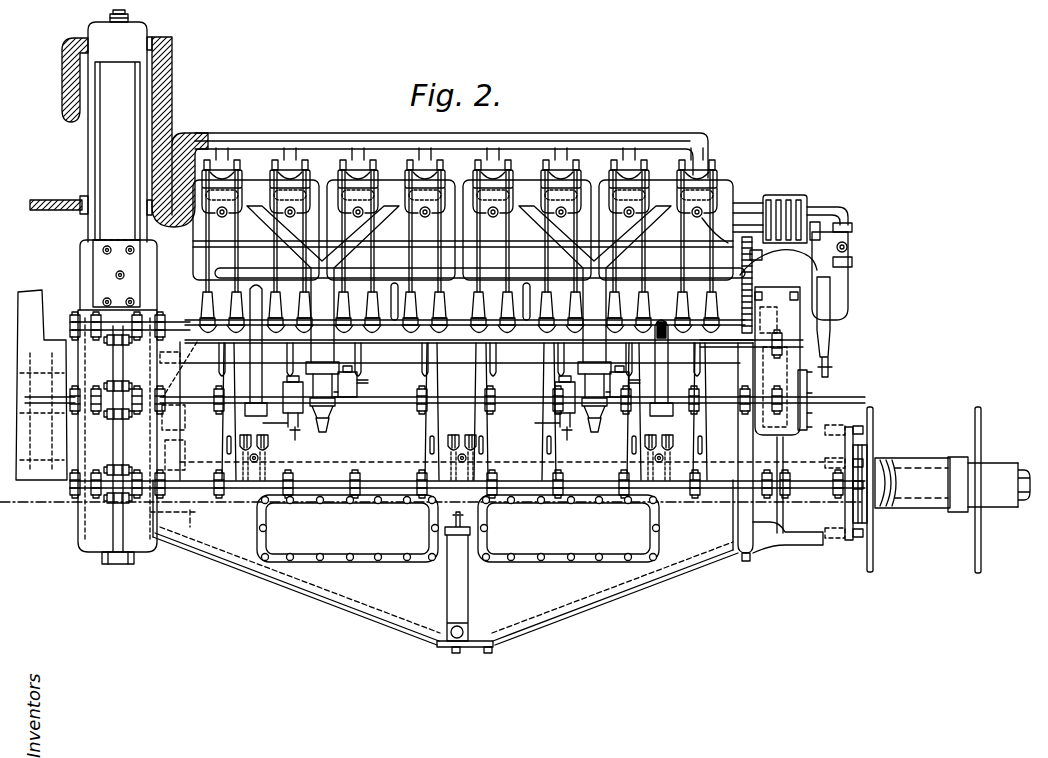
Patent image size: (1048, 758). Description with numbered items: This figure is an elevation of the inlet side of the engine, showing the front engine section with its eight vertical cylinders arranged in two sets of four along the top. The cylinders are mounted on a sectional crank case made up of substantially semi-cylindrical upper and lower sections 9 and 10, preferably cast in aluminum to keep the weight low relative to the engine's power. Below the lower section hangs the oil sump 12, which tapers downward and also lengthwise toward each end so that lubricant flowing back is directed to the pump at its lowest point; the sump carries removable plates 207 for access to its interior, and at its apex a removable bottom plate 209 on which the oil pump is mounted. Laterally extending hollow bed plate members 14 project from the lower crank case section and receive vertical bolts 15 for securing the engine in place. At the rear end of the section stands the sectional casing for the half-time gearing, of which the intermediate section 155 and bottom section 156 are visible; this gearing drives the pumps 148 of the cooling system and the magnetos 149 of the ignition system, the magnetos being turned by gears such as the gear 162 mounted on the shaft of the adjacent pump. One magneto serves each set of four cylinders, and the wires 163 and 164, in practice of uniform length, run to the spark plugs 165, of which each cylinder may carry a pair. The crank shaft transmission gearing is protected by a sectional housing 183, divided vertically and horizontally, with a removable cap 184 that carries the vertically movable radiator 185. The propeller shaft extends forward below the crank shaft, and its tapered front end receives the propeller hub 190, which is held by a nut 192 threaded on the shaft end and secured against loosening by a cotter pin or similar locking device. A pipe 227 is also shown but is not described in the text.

The upper section of the crank case 9 is at (466, 282).
The lower section of the crank case 10 is at (432, 422).
The oil sump 12 is at (444, 563).
The bed plate members 14 is at (358, 443).
The vertical bolts 15 is at (673, 438).
The pumps 148 is at (843, 290).
The magnetos 149 is at (800, 203).
The intermediate section 155 is at (845, 382).
The bottom section 156 is at (783, 418).
The gear 162 is at (745, 285).
The wires 163 is at (618, 323).
The wires 164 is at (405, 243).
The spark plugs 165 is at (712, 206).
The sectional housing 183 is at (90, 500).
The removable cap 184 is at (87, 272).
The radiator 185 is at (100, 40).
The propeller hub 190 is at (907, 472).
The nut 192 is at (1000, 468).
The removable plates 207 is at (458, 528).
The removable bottom plate 209 is at (453, 652).
The oil pipe 227 is at (663, 381).